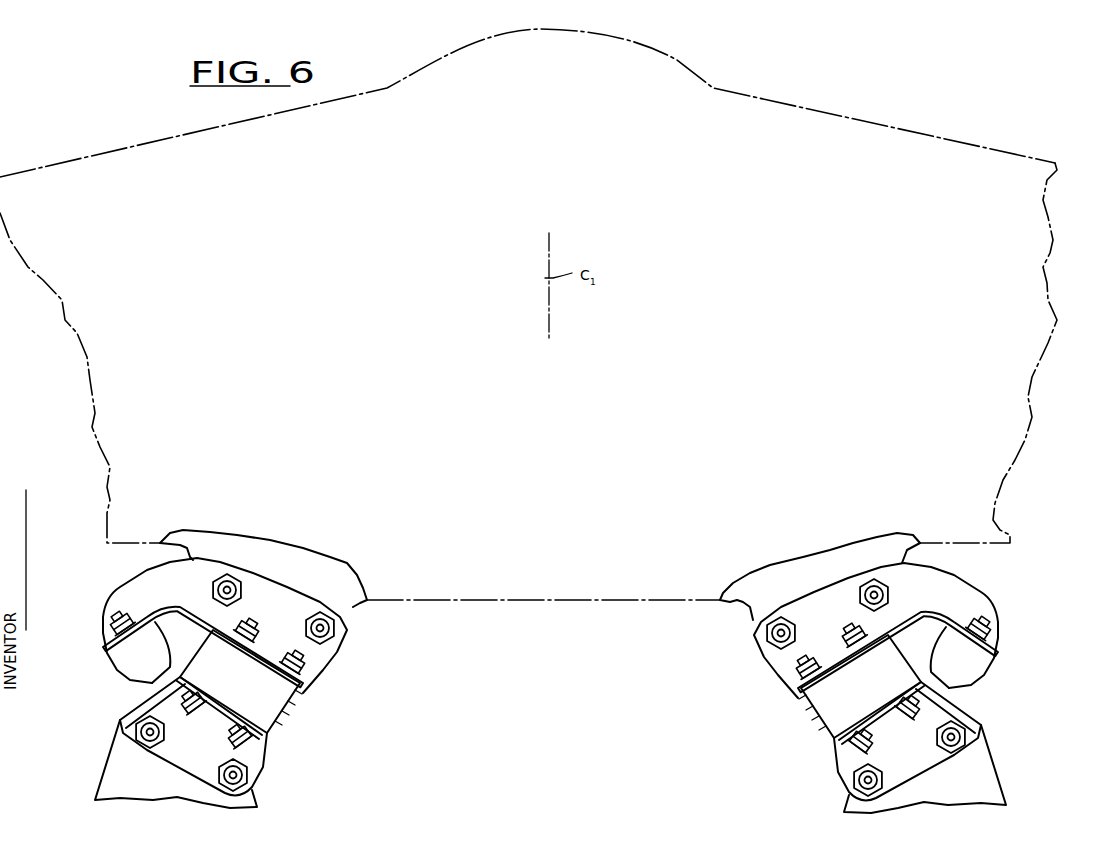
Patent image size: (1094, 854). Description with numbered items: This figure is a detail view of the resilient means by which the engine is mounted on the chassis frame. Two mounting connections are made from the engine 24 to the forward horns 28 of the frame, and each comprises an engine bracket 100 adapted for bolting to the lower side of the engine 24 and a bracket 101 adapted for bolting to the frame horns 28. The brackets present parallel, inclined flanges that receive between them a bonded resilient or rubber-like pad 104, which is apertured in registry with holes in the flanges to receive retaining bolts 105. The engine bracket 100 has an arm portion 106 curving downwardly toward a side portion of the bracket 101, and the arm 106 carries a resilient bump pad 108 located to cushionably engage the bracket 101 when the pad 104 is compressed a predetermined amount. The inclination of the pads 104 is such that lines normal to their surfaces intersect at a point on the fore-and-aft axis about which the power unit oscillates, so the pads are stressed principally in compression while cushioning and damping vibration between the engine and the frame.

The engine 24 is at (798, 107).
The forward horns 28 is at (117, 747).
The engine bracket 100 is at (297, 600).
The bracket 101 is at (252, 757).
The resilient pad 104 is at (288, 710).
The retaining bolts 105 is at (300, 657).
The arm portion 106 is at (137, 587).
The resilient bump pad 108 is at (130, 667).